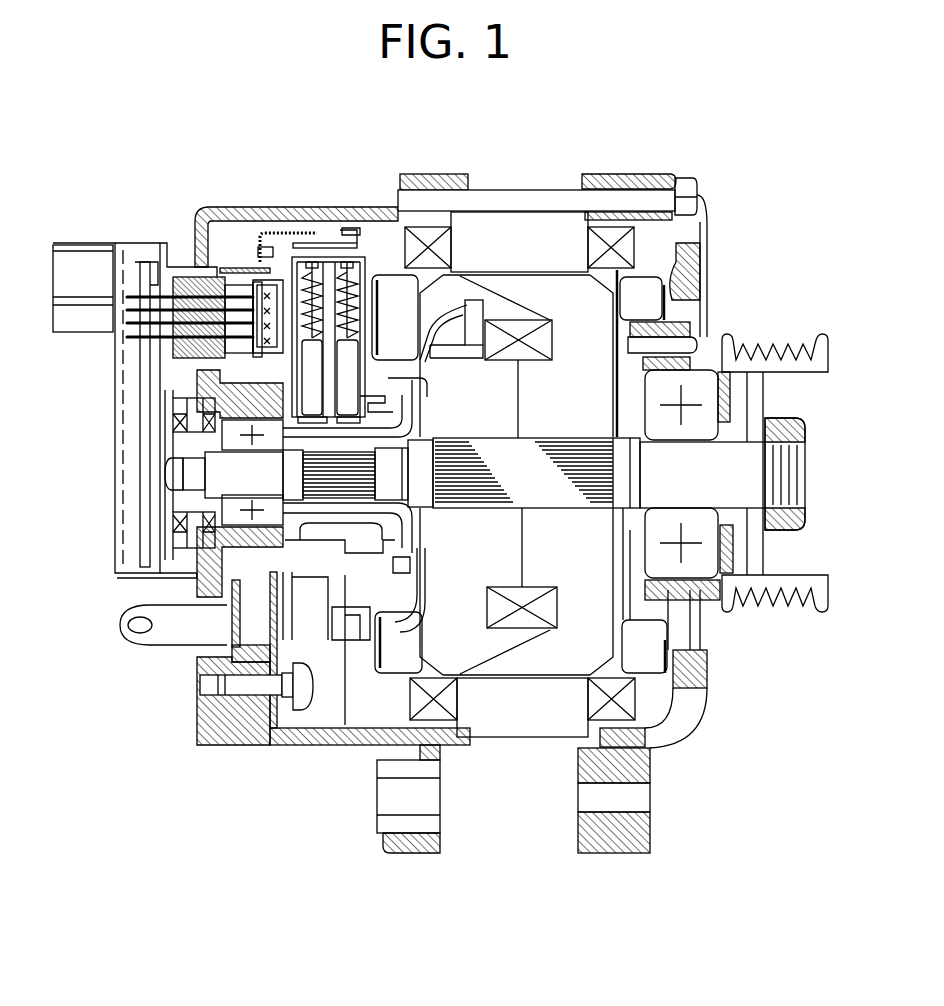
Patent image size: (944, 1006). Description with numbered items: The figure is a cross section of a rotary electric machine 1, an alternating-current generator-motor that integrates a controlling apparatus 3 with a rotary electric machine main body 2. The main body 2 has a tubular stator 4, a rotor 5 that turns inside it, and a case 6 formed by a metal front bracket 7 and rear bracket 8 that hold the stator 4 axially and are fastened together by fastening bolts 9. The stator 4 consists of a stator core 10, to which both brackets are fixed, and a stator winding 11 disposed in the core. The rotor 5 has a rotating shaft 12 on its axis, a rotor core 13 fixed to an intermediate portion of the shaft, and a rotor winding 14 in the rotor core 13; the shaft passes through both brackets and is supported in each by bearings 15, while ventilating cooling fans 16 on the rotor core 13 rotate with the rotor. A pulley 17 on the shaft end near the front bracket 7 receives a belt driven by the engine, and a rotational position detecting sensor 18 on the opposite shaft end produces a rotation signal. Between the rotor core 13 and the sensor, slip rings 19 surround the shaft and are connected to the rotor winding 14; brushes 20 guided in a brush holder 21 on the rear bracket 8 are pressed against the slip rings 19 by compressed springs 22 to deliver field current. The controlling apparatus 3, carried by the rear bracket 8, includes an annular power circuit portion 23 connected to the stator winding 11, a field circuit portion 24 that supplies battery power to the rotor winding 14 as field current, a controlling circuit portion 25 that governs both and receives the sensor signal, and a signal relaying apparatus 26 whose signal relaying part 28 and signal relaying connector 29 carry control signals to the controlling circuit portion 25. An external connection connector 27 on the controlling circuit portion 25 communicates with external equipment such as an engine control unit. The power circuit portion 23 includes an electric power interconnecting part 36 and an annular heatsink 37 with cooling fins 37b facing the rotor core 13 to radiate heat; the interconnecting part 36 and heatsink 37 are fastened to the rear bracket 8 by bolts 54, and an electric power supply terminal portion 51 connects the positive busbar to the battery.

The rotary electric machine 1 is at (698, 150).
The rotary electric machine main body 2 is at (364, 345).
The controlling apparatus 3 is at (147, 242).
The stator 4 is at (518, 212).
The rotor 5 is at (590, 288).
The case 6 is at (206, 207).
The front bracket 7 is at (613, 174).
The rear bracket 8 is at (293, 215).
The fastening bolts 9 is at (497, 190).
The stator core 10 is at (520, 723).
The stator winding 11 is at (437, 716).
The rotating shaft 12 is at (552, 500).
The rotor core 13 is at (658, 688).
The rotor winding 14 is at (529, 623).
The bearings 15 is at (197, 578).
The ventilating cooling fans 16 is at (393, 663).
The pulley 17 is at (760, 345).
The rotational position detecting sensor 18 is at (178, 507).
The slip rings 19 is at (312, 423).
The brushes 20 is at (317, 347).
The brush holder 21 is at (355, 352).
The compressed springs 22 is at (303, 280).
The power circuit portion 23 is at (272, 722).
The field circuit portion 24 is at (262, 280).
The controlling circuit portion 25 is at (115, 390).
The signal relaying apparatus 26 is at (190, 365).
The external connection connector 27 is at (76, 243).
The signal relaying part 28 is at (238, 278).
The signal relaying connector 29 is at (196, 268).
The electric power interconnecting part 36 is at (225, 658).
The heatsink 37 is at (283, 715).
The cooling fins 37b is at (315, 708).
The electric power supply terminal portion 51 is at (170, 640).
The bolts 54 is at (250, 688).